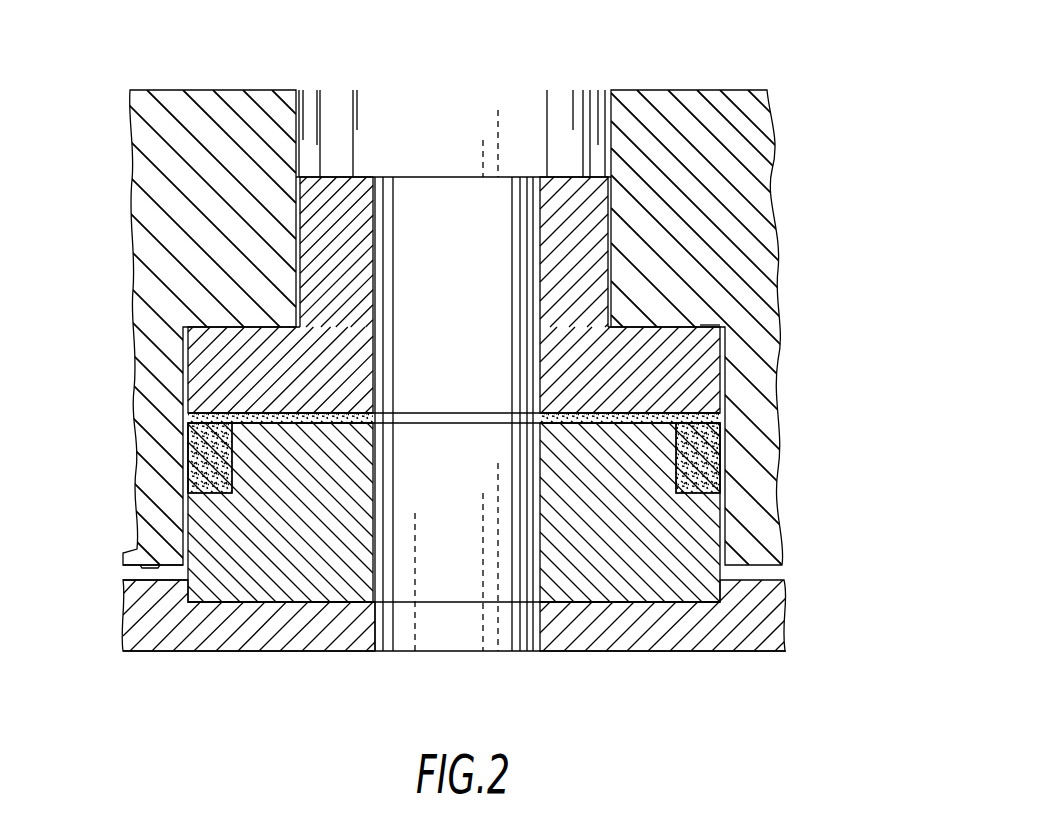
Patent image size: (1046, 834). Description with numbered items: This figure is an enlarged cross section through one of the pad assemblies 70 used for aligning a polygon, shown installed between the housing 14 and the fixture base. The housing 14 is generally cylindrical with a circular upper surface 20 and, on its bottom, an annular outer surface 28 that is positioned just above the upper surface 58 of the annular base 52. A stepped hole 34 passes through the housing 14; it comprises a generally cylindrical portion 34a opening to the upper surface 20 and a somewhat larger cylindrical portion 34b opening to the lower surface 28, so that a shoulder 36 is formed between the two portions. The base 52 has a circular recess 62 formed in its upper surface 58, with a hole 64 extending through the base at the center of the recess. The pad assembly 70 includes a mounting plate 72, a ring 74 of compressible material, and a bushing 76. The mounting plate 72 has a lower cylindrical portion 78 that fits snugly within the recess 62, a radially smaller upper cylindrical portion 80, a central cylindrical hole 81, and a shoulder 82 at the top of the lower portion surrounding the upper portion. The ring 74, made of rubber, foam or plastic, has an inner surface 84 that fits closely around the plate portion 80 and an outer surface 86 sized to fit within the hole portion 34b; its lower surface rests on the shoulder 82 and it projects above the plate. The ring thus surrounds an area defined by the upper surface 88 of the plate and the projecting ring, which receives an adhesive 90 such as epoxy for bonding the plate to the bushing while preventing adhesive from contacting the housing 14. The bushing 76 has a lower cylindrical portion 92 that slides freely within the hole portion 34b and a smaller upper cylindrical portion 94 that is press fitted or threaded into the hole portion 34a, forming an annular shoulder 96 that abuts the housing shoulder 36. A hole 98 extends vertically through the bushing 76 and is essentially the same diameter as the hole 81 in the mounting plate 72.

The housing 14 is at (152, 178).
The upper surface 20 is at (630, 92).
The annular outer surface 28 is at (122, 555).
The hole 34 is at (330, 113).
The cylindrical portion 34a is at (428, 118).
The cylindrical portion 34b is at (196, 513).
The shoulder 36 is at (190, 340).
The annular base 52 is at (190, 652).
The upper surface 58 is at (127, 578).
The circular recess 62 is at (306, 600).
The hole 64 is at (452, 633).
The pad assembly 70 is at (613, 600).
The mounting plate 72 is at (703, 537).
The ring 74 is at (707, 455).
The bushing 76 is at (712, 385).
The lower cylindrical portion 78 is at (701, 603).
The upper cylindrical portion 80 is at (560, 447).
The cylindrical hole 81 is at (435, 521).
The shoulder 82 is at (717, 490).
The inner surface 84 is at (187, 428).
The outer surface 86 is at (192, 450).
The upper surface 88 is at (367, 411).
The adhesive 90 is at (567, 410).
The lower cylindrical portion 92 is at (700, 410).
The upper cylindrical portion 94 is at (568, 197).
The annular shoulder 96 is at (697, 327).
The hole 98 is at (427, 289).